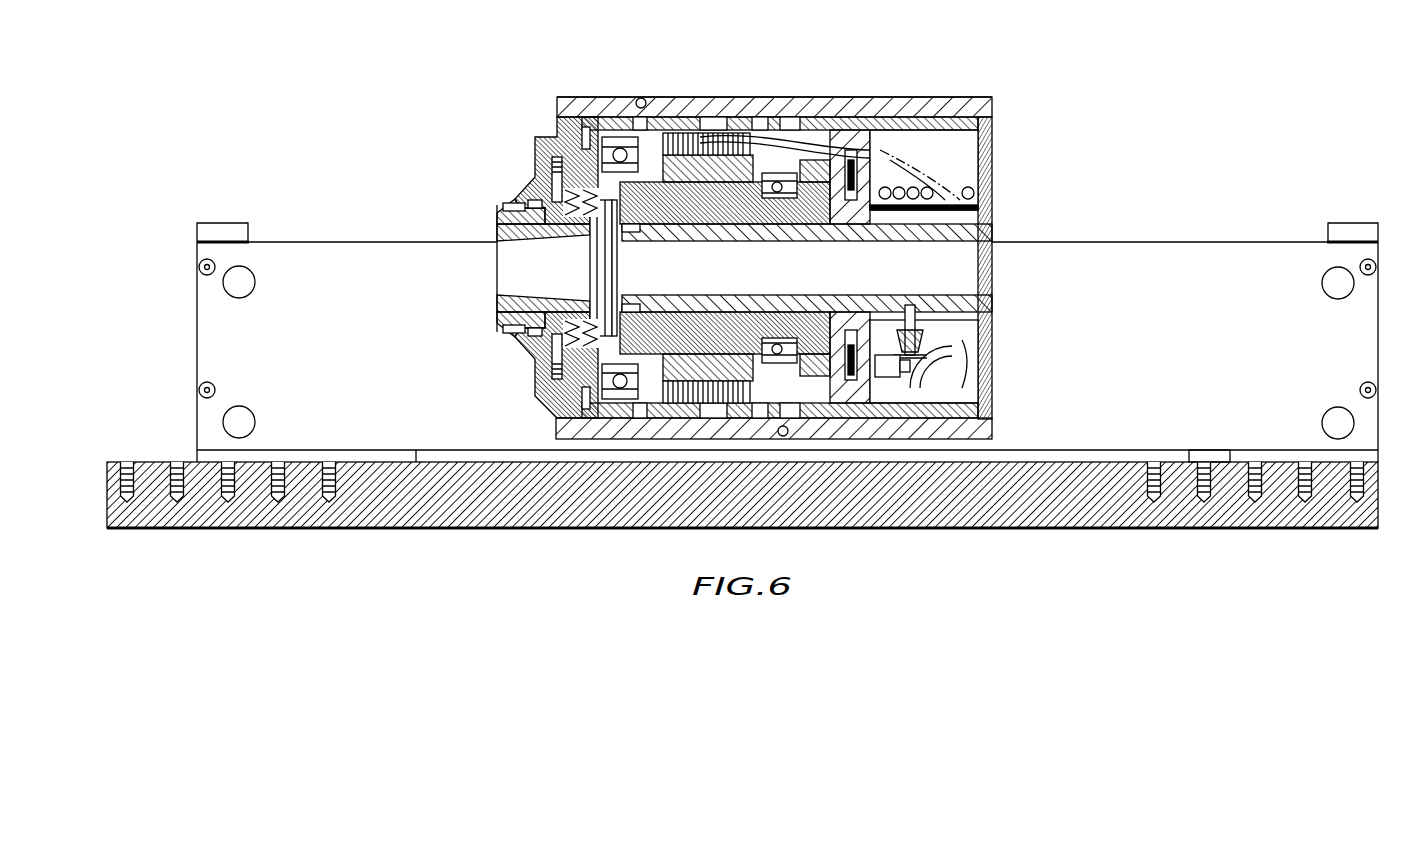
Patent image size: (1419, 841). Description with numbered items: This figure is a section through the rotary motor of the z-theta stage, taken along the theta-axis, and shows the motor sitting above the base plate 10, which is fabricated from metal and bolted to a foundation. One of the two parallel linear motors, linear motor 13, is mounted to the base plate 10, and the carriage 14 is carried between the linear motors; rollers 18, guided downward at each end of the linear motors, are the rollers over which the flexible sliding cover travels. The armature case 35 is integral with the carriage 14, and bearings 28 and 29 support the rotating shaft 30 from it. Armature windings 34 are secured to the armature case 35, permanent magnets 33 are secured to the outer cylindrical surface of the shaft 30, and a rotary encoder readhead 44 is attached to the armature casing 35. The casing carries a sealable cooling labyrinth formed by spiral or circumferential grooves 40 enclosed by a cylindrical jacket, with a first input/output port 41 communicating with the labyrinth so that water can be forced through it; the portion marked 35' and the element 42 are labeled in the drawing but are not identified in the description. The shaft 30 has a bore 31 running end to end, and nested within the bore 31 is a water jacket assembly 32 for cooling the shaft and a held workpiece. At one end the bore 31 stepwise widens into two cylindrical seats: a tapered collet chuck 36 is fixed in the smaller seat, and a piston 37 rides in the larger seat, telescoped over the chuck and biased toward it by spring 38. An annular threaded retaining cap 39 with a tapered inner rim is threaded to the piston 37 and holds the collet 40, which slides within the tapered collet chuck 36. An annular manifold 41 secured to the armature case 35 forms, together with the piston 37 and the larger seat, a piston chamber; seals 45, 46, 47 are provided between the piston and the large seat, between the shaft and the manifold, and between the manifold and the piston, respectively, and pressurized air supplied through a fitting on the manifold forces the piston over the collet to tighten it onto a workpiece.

The base plate 10 is at (1240, 528).
The linear motor 13 is at (1368, 317).
The carriage 14 is at (794, 440).
The rollers 18 is at (248, 272).
The bearing 28 is at (616, 146).
The bearing 29 is at (782, 205).
The rotating shaft 30 is at (655, 135).
The bore 31 is at (807, 220).
The water jacket assembly 32 is at (992, 308).
The permanent magnets 33 is at (698, 237).
The armature windings 34 is at (687, 422).
The armature case 35 is at (774, 231).
The housing top portion 35' is at (774, 70).
The tapered collet chuck 36 is at (612, 283).
The piston 37 is at (523, 193).
The spring 38 is at (592, 248).
The annular threaded retaining cap 39 is at (497, 310).
The collet 40 is at (756, 118).
The annular manifold 41 is at (638, 99).
The seal 42 is at (777, 440).
The rotary encoder readhead 44 is at (857, 170).
The seal 45 is at (558, 157).
The seal 46 is at (555, 404).
The seal 47 is at (518, 345).